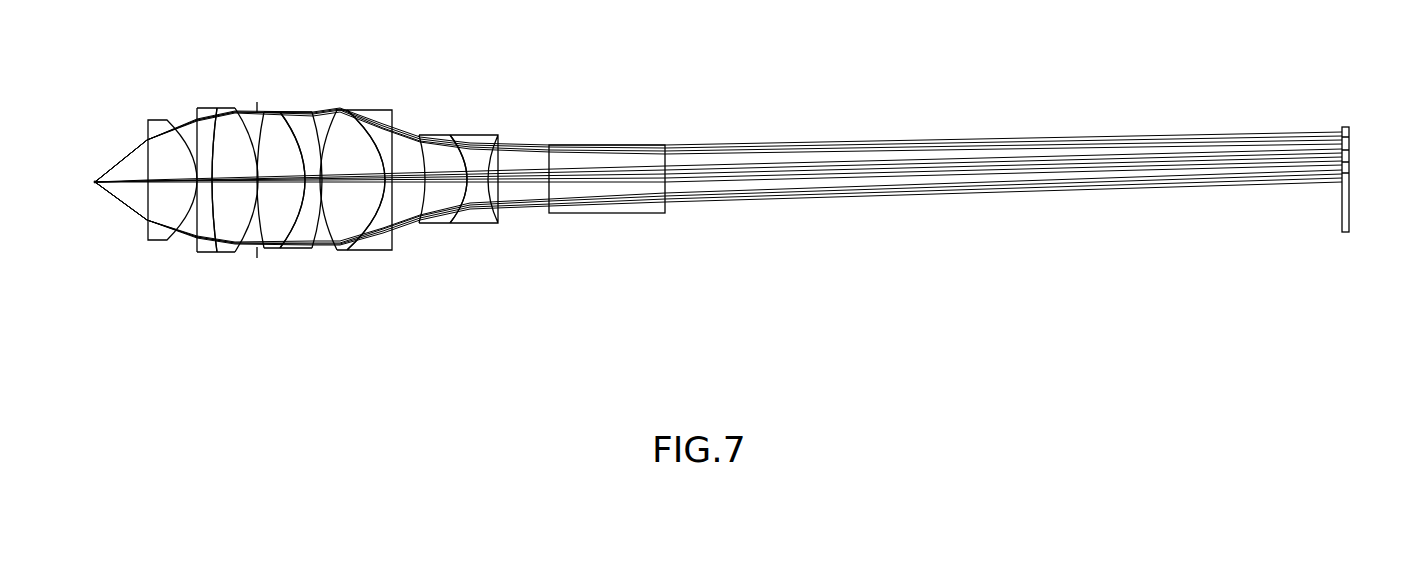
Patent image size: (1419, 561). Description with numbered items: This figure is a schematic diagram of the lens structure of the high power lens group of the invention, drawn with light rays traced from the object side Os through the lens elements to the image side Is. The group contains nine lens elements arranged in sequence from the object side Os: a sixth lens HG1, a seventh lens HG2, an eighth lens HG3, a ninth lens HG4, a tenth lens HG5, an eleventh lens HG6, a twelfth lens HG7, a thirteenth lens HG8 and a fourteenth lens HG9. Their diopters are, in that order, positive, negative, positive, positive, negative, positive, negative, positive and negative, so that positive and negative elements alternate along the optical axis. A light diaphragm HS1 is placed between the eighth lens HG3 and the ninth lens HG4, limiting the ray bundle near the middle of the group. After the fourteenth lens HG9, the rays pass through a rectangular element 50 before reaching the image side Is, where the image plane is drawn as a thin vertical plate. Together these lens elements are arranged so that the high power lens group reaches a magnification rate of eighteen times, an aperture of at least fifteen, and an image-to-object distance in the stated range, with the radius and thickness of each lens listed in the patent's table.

The object side Os is at (95, 182).
The sixth lens HG1 is at (167, 148).
The seventh lens HG2 is at (210, 118).
The eighth lens HG3 is at (225, 127).
The light diaphragm HS1 is at (258, 110).
The ninth lens HG4 is at (277, 230).
The tenth lens HG5 is at (303, 232).
The eleventh lens HG6 is at (353, 224).
The twelfth lens HG7 is at (383, 218).
The thirteenth lens HG8 is at (440, 153).
The fourteenth lens HG9 is at (482, 142).
The optical element / filter block 50 is at (560, 167).
The image side Is is at (1349, 195).